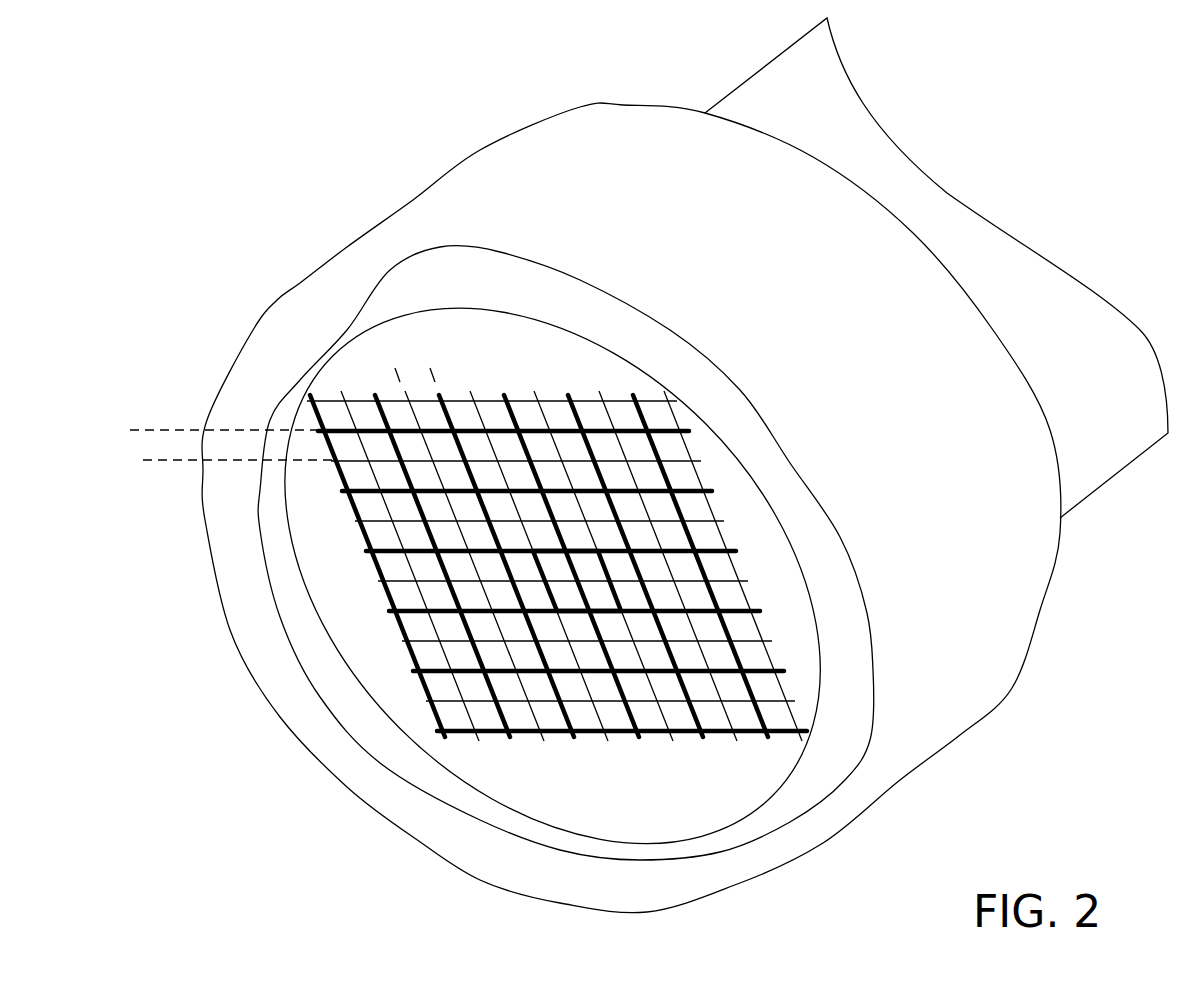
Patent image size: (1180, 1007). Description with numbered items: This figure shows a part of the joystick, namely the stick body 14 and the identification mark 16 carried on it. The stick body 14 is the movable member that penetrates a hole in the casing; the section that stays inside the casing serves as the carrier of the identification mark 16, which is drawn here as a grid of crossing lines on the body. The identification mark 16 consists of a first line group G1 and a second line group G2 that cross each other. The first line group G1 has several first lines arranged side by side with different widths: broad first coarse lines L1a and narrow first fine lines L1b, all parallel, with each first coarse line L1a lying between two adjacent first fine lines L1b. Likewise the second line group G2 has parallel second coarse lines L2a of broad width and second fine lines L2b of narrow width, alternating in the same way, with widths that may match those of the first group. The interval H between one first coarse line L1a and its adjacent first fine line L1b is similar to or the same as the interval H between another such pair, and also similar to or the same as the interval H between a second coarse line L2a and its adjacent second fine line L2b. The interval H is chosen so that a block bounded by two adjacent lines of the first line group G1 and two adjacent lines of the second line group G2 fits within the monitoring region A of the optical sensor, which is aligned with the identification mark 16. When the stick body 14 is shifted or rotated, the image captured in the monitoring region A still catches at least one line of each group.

The stick body 14 is at (1092, 477).
The identification mark 16 is at (720, 746).
The monitoring region A is at (625, 598).
The interval H is at (180, 500).
The first line group G1 is at (278, 762).
The second line group G2 is at (143, 518).
The first coarse line L1a is at (510, 737).
The first fine line L1b is at (542, 741).
The second coarse line L2a is at (366, 551).
The second fine line L2b is at (355, 521).